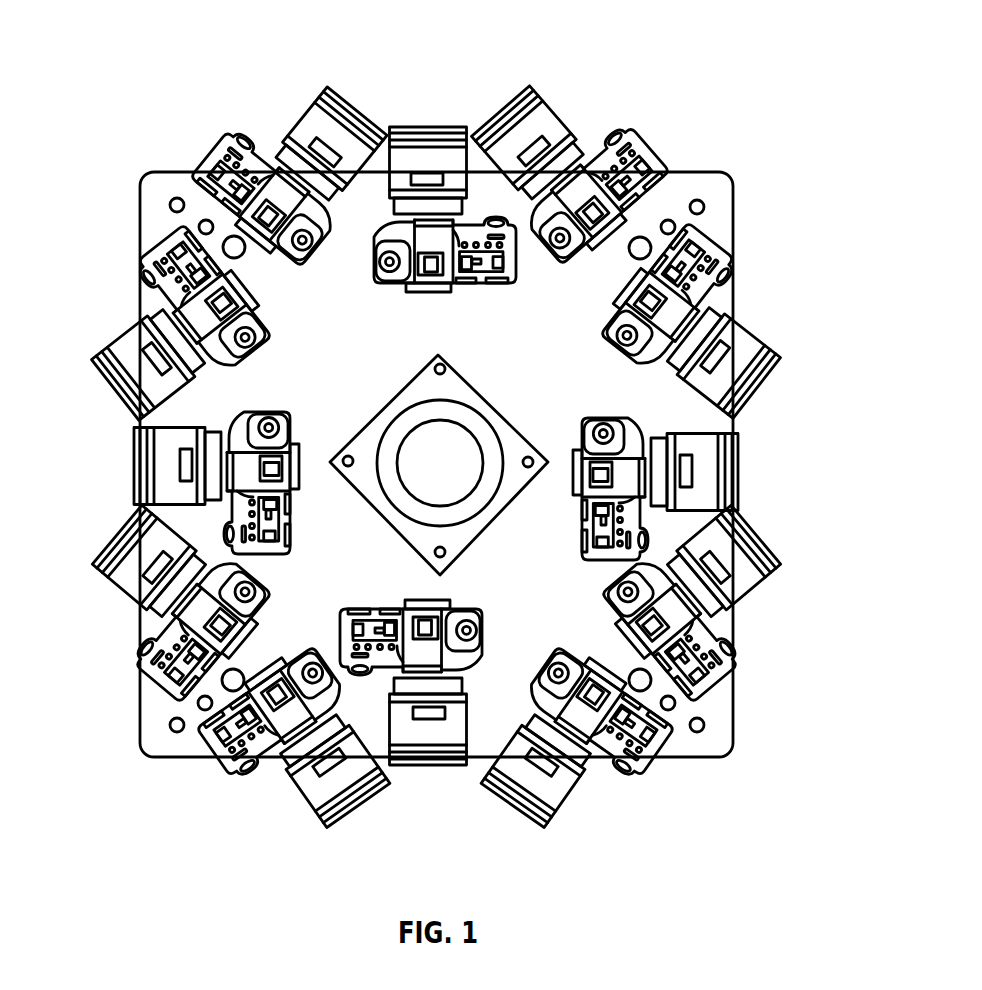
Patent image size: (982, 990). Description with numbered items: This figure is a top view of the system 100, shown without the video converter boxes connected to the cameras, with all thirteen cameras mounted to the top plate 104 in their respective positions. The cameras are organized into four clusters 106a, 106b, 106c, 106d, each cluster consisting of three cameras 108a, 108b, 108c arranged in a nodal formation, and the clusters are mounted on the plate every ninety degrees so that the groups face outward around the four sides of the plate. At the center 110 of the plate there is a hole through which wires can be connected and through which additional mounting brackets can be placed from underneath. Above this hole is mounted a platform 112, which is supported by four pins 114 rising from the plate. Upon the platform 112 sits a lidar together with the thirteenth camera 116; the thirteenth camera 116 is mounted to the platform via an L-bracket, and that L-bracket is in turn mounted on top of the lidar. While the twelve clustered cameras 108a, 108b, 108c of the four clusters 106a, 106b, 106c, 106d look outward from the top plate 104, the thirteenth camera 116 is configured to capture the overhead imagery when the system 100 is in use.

The system 100 is at (745, 32).
The top plate 104 is at (527, 318).
The cluster 106a is at (483, 190).
The cluster 106b is at (717, 489).
The cluster 106c is at (596, 706).
The cluster 106d is at (176, 483).
The camera 108a is at (297, 747).
The camera 108b is at (438, 734).
The camera 108c is at (573, 747).
The center 110 is at (463, 466).
The platform 112 is at (301, 466).
The pins 114 is at (301, 543).
The 13th camera 116 is at (624, 376).